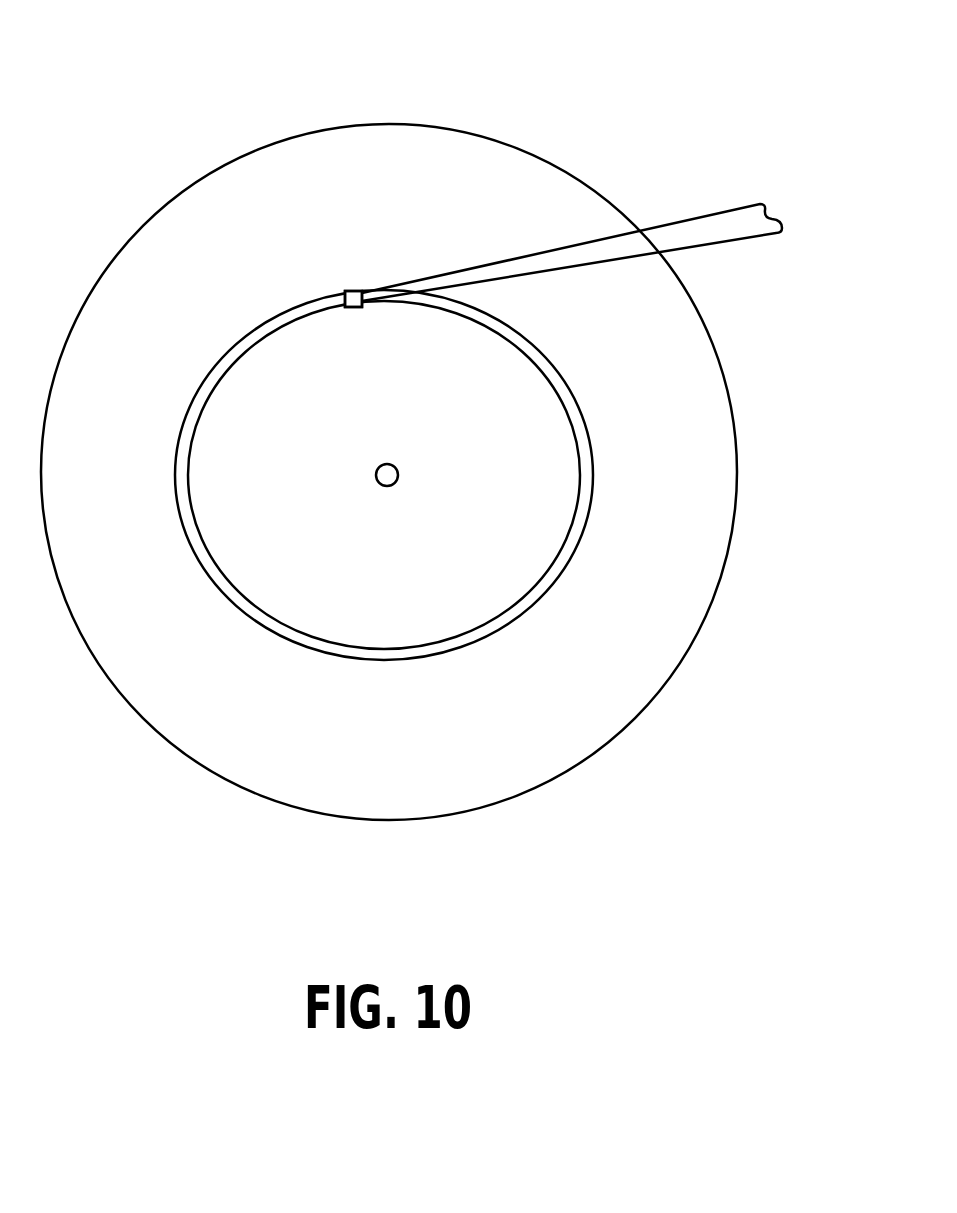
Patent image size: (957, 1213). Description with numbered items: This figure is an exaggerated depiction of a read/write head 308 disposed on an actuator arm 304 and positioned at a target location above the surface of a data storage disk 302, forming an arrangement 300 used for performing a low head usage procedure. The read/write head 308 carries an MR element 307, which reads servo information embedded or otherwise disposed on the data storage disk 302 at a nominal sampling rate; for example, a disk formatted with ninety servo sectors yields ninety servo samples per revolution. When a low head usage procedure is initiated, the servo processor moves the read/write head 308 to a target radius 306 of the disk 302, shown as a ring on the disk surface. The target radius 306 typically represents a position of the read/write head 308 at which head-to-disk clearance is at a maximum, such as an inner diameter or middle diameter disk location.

The assembly 300 is at (118, 104).
The data storage disk 302 is at (738, 428).
The strap 304 is at (700, 217).
The target radius 306 is at (443, 640).
The MR element 307 is at (354, 307).
The read/write head 308 is at (353, 290).